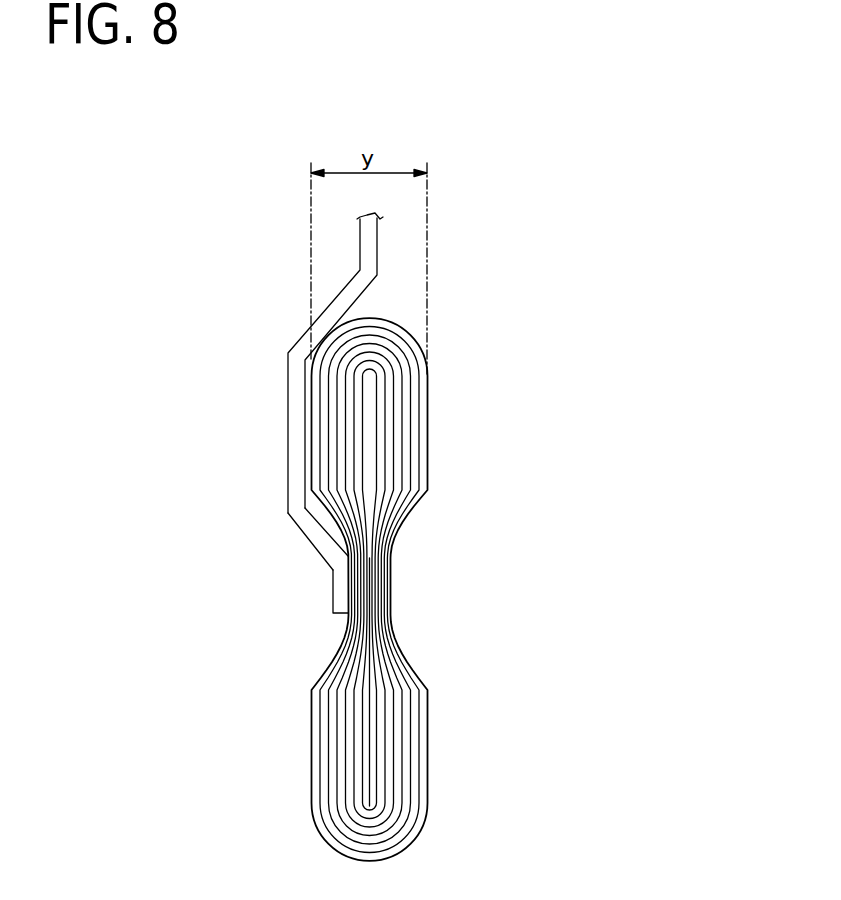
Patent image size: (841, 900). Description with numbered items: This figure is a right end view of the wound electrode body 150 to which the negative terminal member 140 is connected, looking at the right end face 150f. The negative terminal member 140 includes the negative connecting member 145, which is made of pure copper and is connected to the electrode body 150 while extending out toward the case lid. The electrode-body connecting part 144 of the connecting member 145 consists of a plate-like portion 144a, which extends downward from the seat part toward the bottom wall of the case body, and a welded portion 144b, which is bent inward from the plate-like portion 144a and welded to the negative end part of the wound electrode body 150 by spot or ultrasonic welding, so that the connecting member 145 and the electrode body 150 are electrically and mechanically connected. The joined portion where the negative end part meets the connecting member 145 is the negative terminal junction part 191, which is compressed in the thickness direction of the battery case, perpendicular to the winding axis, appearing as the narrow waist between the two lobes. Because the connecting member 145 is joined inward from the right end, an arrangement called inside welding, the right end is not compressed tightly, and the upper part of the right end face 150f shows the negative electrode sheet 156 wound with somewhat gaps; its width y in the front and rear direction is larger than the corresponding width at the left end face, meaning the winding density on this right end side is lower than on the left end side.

The negative terminal member 140 is at (233, 413).
The negative connecting member 145 is at (288, 397).
The electrode-body connecting part 144 is at (148, 517).
The plate-like portion 144a is at (288, 477).
The welded portion 144b is at (332, 578).
The wound electrode body 150 is at (428, 792).
The right end face 150f is at (380, 426).
The negative electrode sheet 156 is at (428, 385).
The negative terminal junction part 191 is at (392, 590).